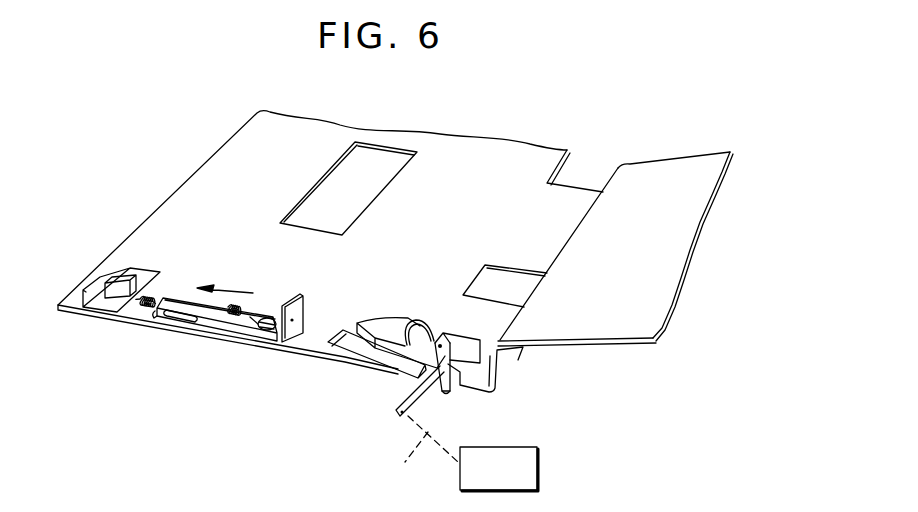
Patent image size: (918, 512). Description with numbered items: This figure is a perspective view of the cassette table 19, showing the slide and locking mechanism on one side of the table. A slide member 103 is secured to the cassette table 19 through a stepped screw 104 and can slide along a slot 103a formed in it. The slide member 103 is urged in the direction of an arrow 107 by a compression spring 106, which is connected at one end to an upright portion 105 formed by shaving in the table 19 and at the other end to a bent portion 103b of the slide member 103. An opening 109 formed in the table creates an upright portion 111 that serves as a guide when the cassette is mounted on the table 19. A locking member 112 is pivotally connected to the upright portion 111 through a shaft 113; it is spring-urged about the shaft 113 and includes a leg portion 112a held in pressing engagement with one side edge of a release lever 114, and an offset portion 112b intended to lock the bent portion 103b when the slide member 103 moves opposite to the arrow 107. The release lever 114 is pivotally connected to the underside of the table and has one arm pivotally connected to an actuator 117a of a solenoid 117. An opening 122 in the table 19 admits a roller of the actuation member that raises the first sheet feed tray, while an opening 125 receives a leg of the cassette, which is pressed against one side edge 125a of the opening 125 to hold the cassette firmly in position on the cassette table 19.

The cassette table 19 is at (190, 182).
The opening 122 is at (570, 180).
The opening 125 is at (327, 200).
The side edge of opening 125a is at (384, 174).
The upright portion 105 is at (105, 276).
The compression spring 106 is at (141, 301).
The slide member 103 is at (163, 319).
The slot 103a is at (194, 317).
The bent portion 103b is at (300, 297).
The stepped screw 104 is at (267, 330).
The arrow 107 is at (237, 291).
The opening 109 is at (348, 343).
The upright portion 111 is at (363, 320).
The locking member 112 is at (451, 342).
The leg portion 112a is at (447, 394).
The offset portion 112b is at (417, 325).
The shaft 113 is at (442, 342).
The release lever 114 is at (401, 414).
The solenoid 117 is at (503, 447).
The actuator 117a is at (416, 452).